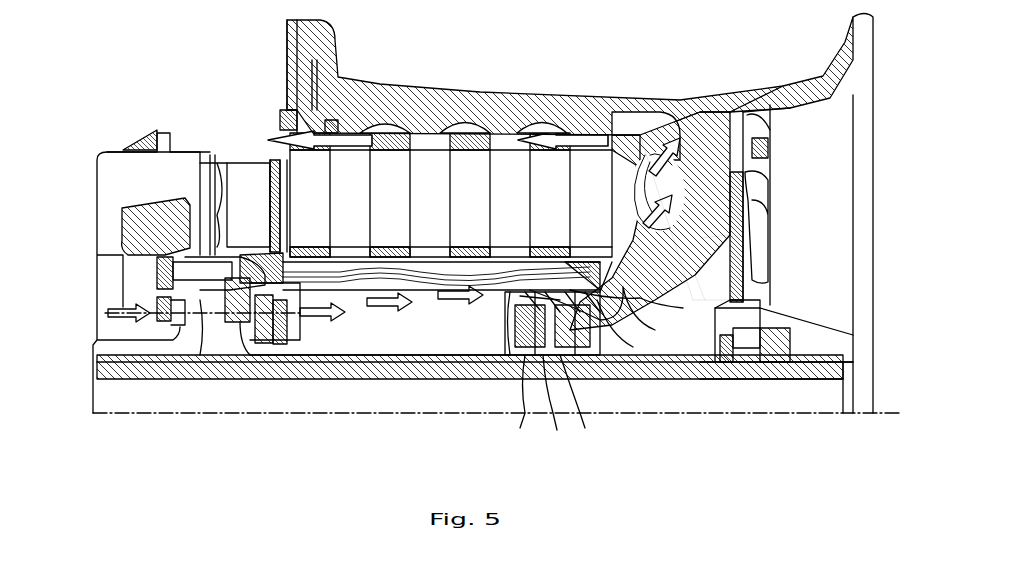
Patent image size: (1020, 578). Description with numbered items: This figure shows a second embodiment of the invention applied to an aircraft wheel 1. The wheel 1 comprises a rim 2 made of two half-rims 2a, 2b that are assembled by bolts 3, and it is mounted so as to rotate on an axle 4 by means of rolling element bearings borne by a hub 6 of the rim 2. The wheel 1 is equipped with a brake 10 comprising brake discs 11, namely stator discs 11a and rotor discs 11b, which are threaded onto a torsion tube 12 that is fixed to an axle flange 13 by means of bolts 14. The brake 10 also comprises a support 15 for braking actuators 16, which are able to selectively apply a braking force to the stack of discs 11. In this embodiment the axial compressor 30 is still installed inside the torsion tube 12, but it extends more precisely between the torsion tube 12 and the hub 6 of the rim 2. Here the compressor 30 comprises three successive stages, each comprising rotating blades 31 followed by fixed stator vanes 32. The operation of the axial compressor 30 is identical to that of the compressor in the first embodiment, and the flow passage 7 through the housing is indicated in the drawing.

The aircraft wheel 1 is at (203, 58).
The rim 2 is at (420, 68).
The half-rim 2a is at (317, 50).
The half-rim 2b is at (745, 92).
The bolts 3 is at (770, 150).
The axle 4 is at (805, 367).
The hub 6 is at (596, 368).
The cooling air passage 7 is at (700, 255).
The brake 10 is at (150, 113).
The brake discs 11 is at (268, 158).
The stator discs 11a is at (322, 201).
The rotor discs 11b is at (362, 201).
The torsion tube 12 is at (385, 334).
The axle flange 13 is at (240, 357).
The bolts 14 is at (205, 357).
The support 15 is at (107, 152).
The braking actuators 16 is at (240, 168).
The axial compressor 30 is at (485, 305).
The rotating blades 31 is at (655, 330).
The fixed stator vanes 32 is at (624, 374).